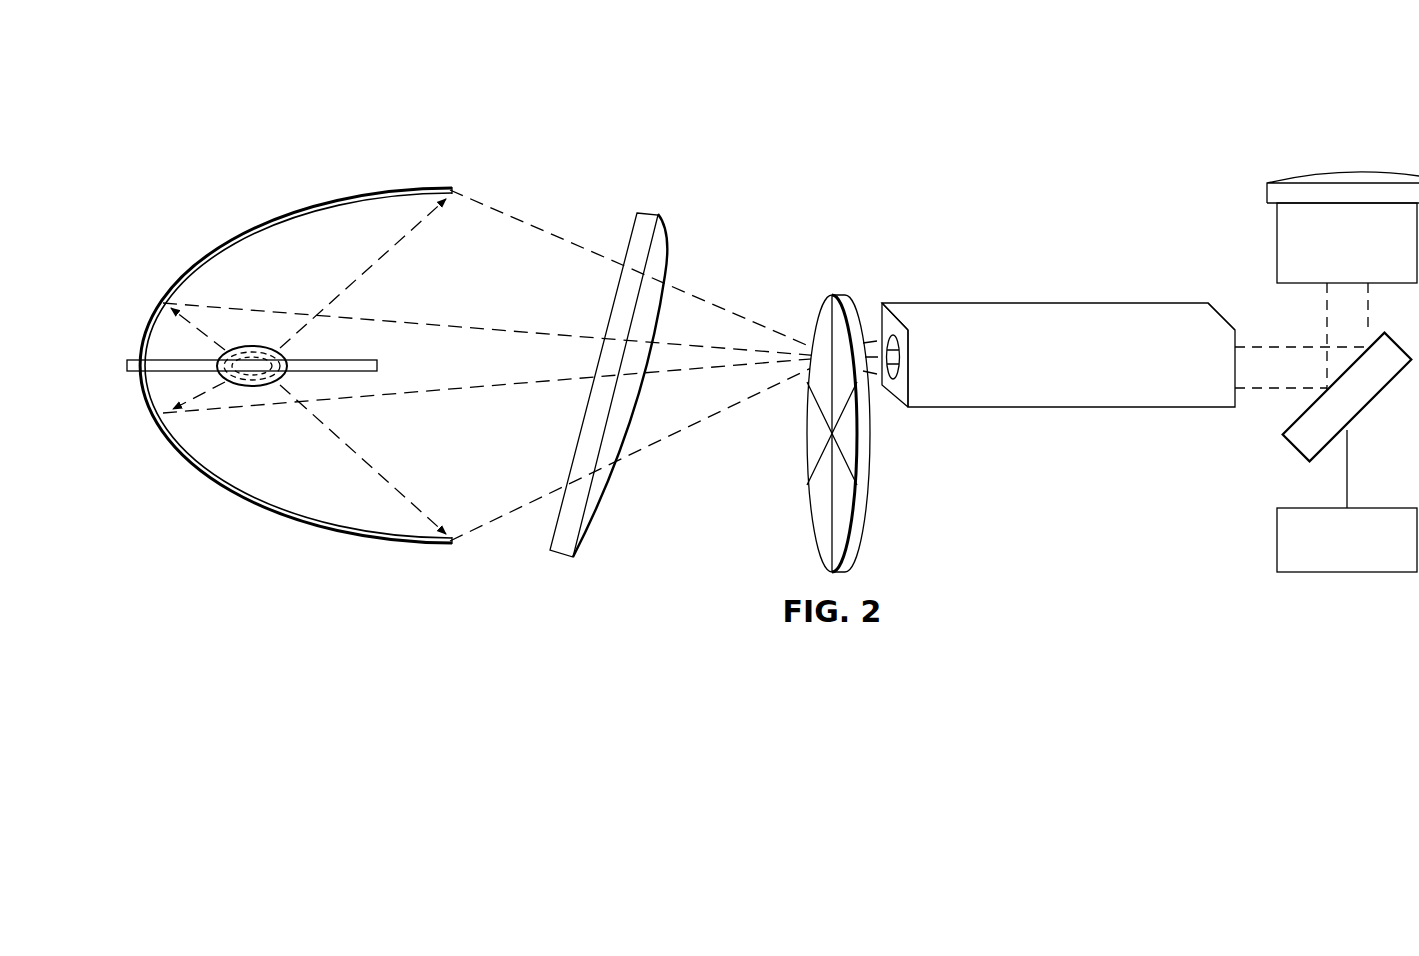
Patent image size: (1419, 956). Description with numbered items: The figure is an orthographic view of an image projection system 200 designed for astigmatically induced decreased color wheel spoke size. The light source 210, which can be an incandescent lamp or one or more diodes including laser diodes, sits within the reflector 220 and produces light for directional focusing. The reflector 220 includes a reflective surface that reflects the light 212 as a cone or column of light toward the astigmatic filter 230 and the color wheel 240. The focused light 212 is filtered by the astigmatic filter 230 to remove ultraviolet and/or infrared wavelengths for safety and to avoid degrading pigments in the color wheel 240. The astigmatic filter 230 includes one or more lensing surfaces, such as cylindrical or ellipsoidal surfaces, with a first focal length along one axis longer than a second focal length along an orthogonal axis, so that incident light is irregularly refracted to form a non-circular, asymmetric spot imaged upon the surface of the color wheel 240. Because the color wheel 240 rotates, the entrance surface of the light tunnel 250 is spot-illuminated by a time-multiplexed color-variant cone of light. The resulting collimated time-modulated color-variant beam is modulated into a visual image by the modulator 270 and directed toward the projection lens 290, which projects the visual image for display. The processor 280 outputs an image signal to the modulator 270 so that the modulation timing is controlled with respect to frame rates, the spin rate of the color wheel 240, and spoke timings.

The image projection system 200 is at (703, 142).
The light source 210 is at (248, 388).
The light 212 is at (432, 323).
The reflector 220 is at (268, 214).
The astigmatic filter 230 is at (612, 302).
The color wheel 240 is at (838, 292).
The light tunnel 250 is at (1062, 312).
The modulator 270 is at (1358, 418).
The processor 280 is at (1277, 540).
The projection lens 290 is at (1277, 242).